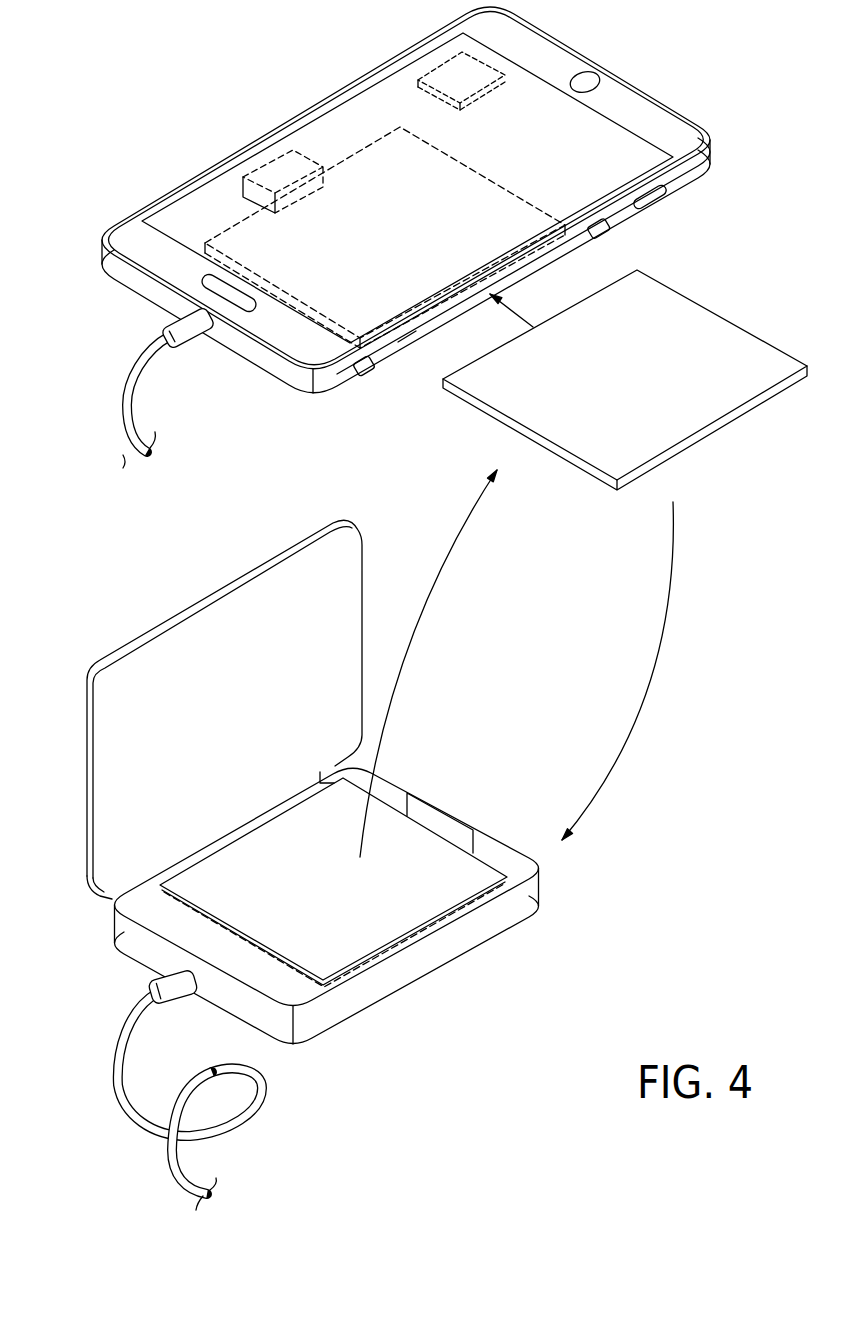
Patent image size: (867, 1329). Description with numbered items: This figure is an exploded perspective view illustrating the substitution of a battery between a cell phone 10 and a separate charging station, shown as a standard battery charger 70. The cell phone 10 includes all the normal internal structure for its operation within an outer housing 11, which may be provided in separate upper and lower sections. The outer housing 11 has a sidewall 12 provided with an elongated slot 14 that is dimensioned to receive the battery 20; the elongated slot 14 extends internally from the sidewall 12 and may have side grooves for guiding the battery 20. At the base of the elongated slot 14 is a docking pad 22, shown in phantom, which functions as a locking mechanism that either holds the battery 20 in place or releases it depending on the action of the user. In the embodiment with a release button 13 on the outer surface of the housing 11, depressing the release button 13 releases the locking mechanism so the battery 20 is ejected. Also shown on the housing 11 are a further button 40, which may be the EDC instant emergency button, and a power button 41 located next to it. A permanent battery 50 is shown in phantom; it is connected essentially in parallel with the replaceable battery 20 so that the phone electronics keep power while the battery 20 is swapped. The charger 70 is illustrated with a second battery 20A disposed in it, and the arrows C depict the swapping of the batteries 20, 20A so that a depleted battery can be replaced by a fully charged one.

The cell phone 10 is at (300, 95).
The outer housing 11 is at (652, 122).
The sidewall 12 is at (680, 183).
The release button 13 is at (367, 374).
The elongated slot 14 is at (407, 337).
The battery 20 is at (640, 380).
The battery 20A is at (355, 888).
The docking pad 22 is at (283, 167).
The button 40 is at (610, 231).
The power button 41 is at (652, 204).
The permanent battery 50 is at (440, 62).
The battery charger 70 is at (443, 971).
The arrows C is at (450, 550).